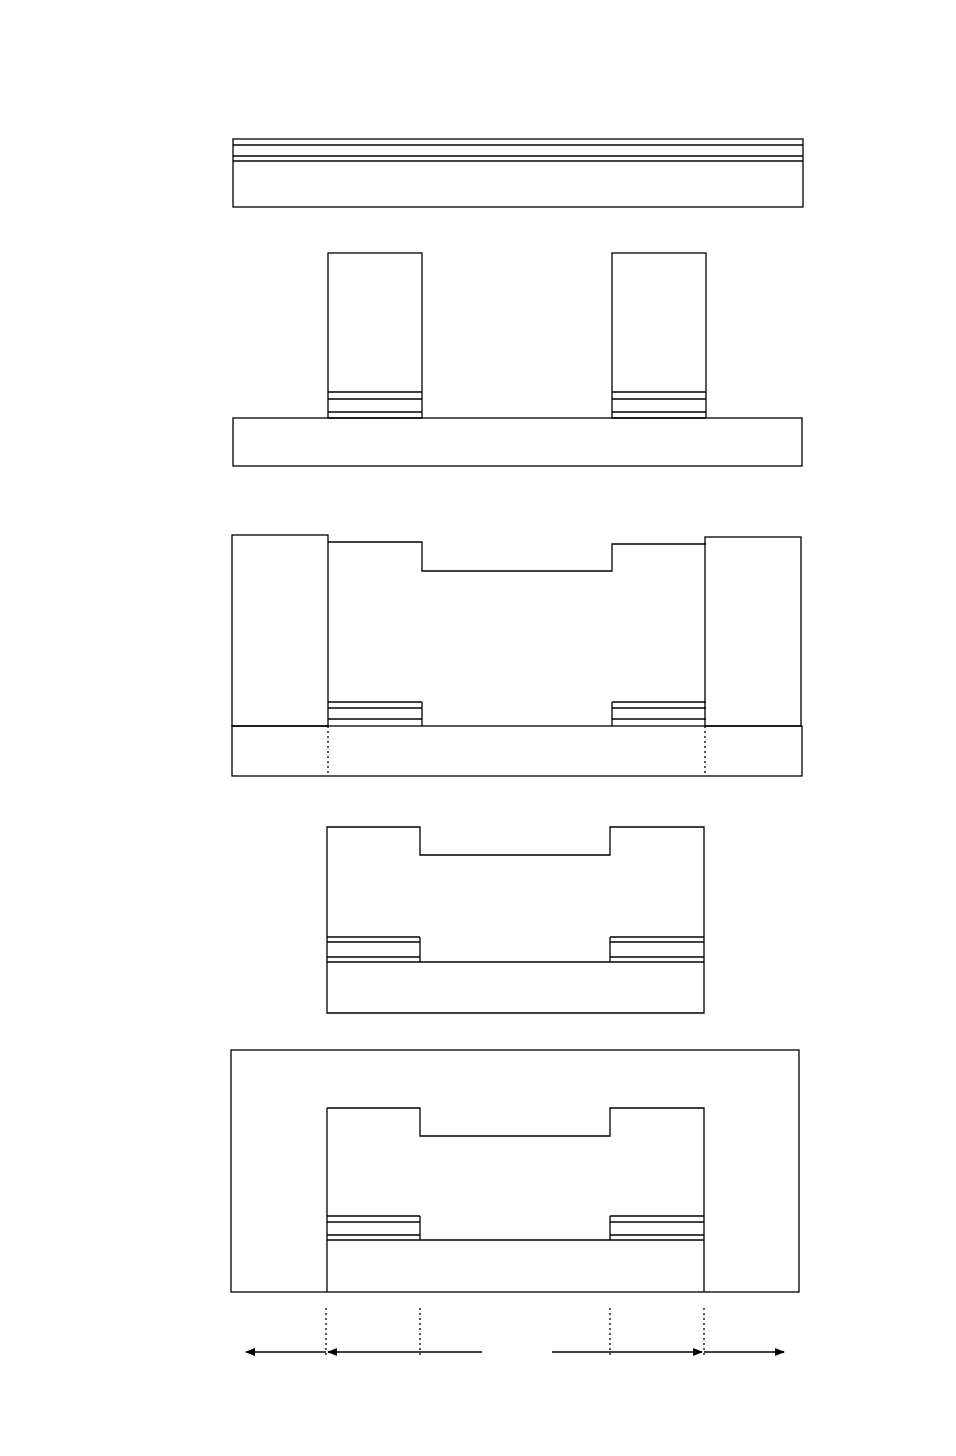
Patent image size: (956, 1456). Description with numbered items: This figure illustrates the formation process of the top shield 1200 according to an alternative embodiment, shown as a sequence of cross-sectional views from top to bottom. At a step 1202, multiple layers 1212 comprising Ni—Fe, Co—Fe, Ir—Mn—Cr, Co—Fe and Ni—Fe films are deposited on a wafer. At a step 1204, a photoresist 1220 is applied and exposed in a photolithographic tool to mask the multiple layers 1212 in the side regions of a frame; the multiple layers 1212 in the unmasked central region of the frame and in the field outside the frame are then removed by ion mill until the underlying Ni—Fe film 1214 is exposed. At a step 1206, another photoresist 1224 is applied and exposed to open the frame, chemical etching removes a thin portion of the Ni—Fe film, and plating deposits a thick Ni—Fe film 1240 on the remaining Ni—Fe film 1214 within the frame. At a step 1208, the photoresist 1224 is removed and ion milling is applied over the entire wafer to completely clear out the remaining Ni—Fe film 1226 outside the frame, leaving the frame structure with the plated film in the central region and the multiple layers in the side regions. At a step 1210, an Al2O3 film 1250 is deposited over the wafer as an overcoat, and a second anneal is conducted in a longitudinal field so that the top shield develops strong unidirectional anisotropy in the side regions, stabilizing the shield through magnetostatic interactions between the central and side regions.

The top shield 1200 is at (122, 108).
The step 1202 is at (525, 167).
The step 1204 is at (497, 359).
The step 1206 is at (519, 651).
The step 1208 is at (488, 920).
The step 1210 is at (519, 1171).
The multiple layers 1212 is at (770, 141).
The Ni—Fe film 1214 is at (720, 432).
The photoresist 1220 is at (342, 305).
The photoresist 1224 is at (265, 587).
The remaining Ni—Fe film 1226 is at (275, 762).
The Ni—Fe film 1240 is at (518, 617).
The Al2O3 film 1250 is at (765, 1143).